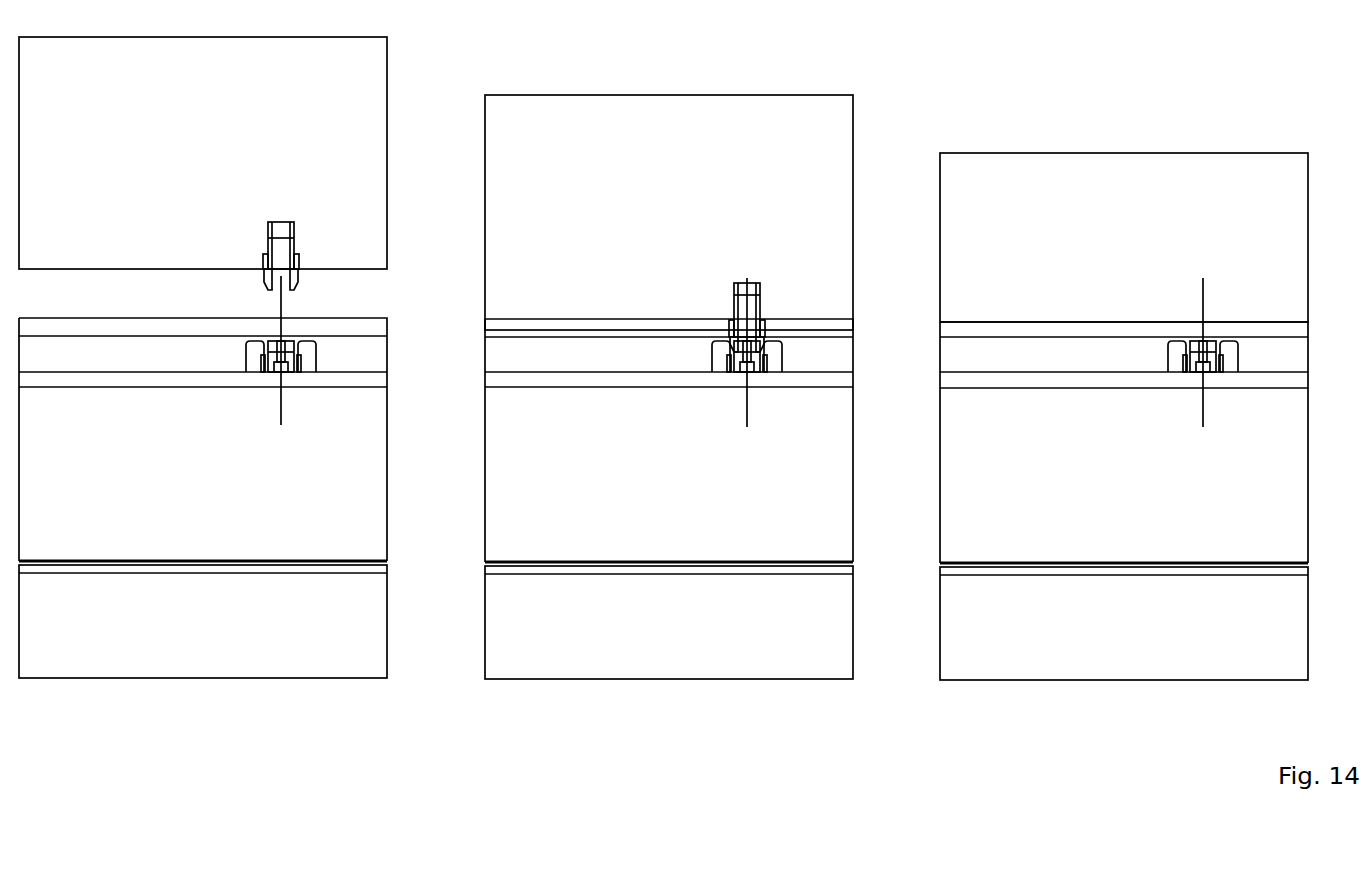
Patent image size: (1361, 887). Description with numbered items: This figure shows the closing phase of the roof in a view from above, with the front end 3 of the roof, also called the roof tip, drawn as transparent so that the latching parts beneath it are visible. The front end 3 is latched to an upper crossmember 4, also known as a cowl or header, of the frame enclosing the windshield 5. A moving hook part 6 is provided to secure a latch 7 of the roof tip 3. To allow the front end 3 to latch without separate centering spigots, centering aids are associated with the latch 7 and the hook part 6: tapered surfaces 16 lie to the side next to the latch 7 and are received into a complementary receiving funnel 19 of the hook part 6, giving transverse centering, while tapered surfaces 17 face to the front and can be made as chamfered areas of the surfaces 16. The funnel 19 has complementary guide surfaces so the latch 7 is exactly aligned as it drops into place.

The front end of the roof 3 is at (362, 167).
The upper crossmember 4 is at (368, 468).
The windshield 5 is at (360, 622).
The hook part 6 is at (292, 370).
The latch 7 is at (284, 284).
The tapered surfaces 16 is at (300, 267).
The tapered surfaces 17 is at (293, 292).
The receiving funnel 19 is at (295, 345).